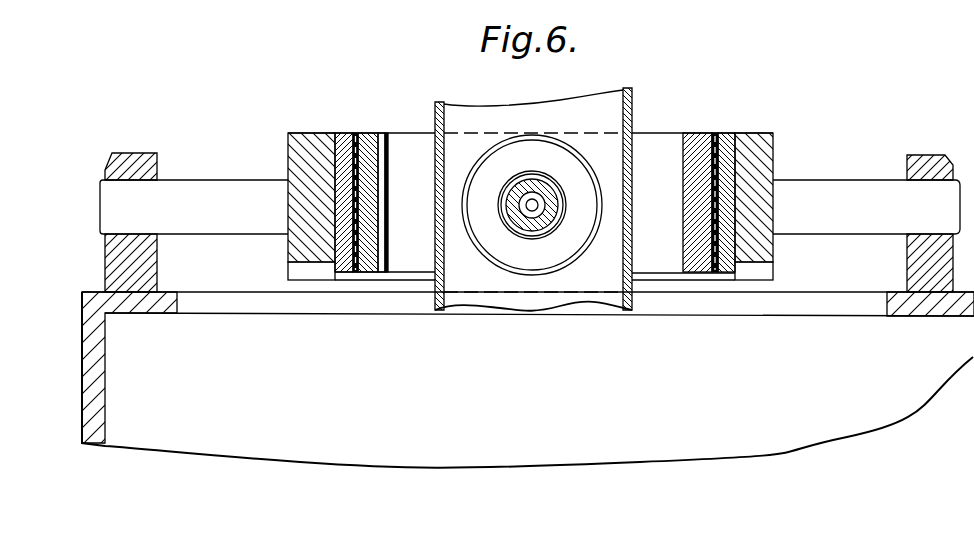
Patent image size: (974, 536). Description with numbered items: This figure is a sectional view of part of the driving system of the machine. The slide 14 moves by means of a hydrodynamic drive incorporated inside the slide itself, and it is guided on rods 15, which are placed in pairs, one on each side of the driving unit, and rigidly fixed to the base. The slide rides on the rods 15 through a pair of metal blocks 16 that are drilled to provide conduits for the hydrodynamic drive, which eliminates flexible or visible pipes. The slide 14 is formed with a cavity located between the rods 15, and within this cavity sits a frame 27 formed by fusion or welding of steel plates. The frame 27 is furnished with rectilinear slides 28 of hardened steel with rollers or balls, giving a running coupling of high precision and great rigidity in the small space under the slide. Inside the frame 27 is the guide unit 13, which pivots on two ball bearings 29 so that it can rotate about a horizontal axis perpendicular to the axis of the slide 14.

The guide unit 13 is at (612, 155).
The slide 14 is at (758, 150).
The rods 15 is at (820, 190).
The metal blocks 16 is at (142, 160).
The frame 27 is at (383, 135).
The rectilinear slides 28 is at (353, 140).
The ball bearings 29 is at (533, 188).